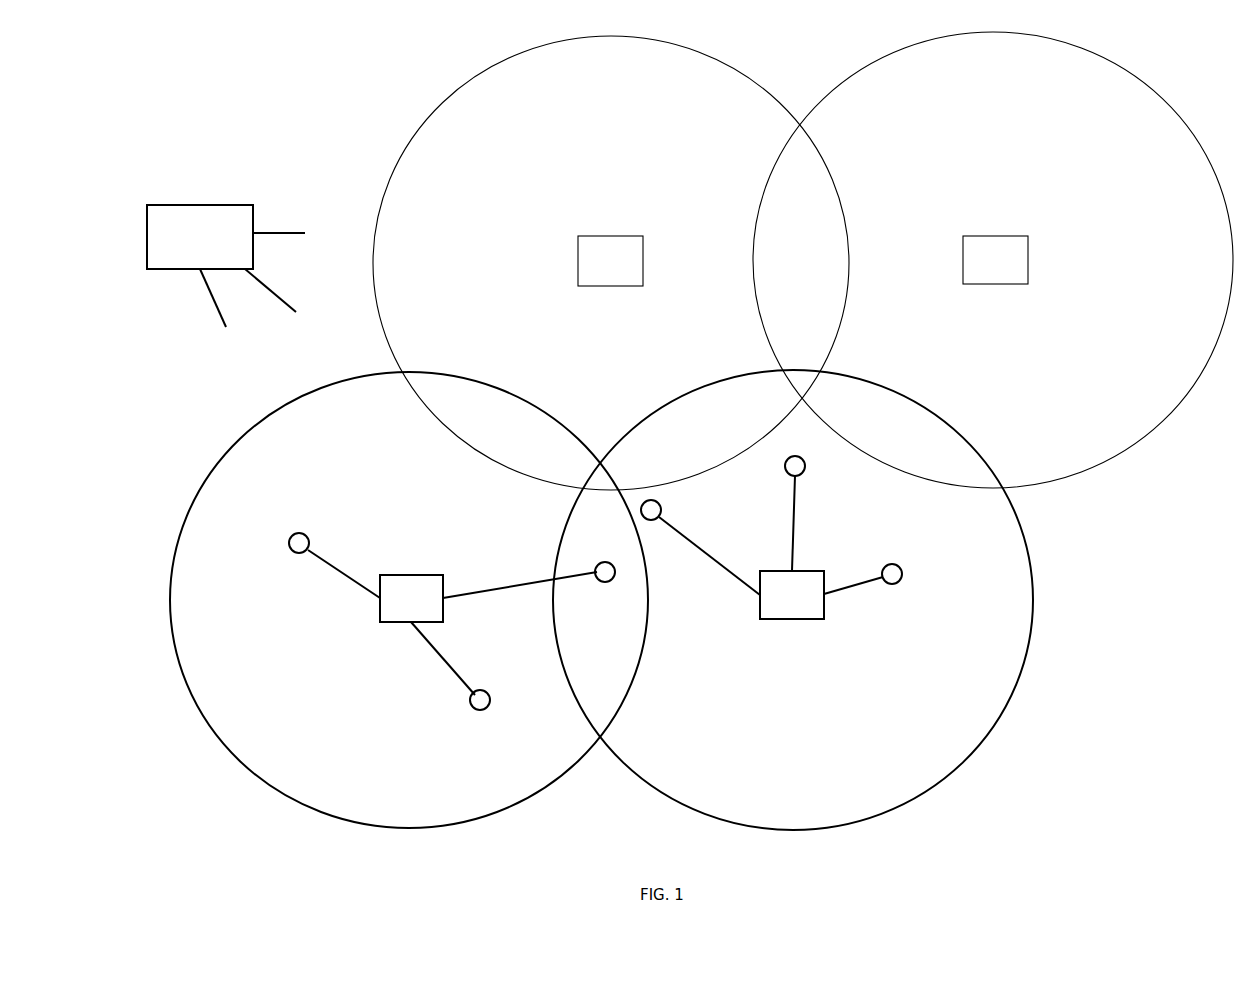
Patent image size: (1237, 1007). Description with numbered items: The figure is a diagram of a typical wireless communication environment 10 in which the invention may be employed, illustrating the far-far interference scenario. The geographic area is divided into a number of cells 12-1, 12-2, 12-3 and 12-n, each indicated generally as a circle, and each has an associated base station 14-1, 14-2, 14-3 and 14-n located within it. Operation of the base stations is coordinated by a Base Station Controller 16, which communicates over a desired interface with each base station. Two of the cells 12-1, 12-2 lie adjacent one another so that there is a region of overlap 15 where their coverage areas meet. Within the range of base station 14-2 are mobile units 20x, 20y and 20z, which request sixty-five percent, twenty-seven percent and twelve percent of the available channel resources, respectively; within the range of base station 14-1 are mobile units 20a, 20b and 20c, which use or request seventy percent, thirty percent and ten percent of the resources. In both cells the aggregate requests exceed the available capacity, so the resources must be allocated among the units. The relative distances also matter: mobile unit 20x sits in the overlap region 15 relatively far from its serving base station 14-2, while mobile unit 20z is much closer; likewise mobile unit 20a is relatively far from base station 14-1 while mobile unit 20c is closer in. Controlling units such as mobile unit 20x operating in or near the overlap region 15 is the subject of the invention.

The wireless communication environment 10 is at (162, 857).
The Base Station Controller 16 is at (226, 266).
The cell 12-1 is at (793, 600).
The cell 12-2 is at (409, 600).
The cell 12-3 is at (611, 263).
The cell 12-n is at (993, 260).
The base station 14-1 is at (771, 547).
The base station 14-2 is at (452, 622).
The base station 14-3 is at (610, 261).
The base station 14-n is at (995, 260).
The region of overlap 15 is at (600, 676).
The mobile unit 20a is at (661, 508).
The mobile unit 20b is at (805, 466).
The mobile unit 20c is at (899, 567).
The mobile unit 20x is at (601, 563).
The mobile unit 20y is at (501, 686).
The mobile unit 20z is at (306, 536).